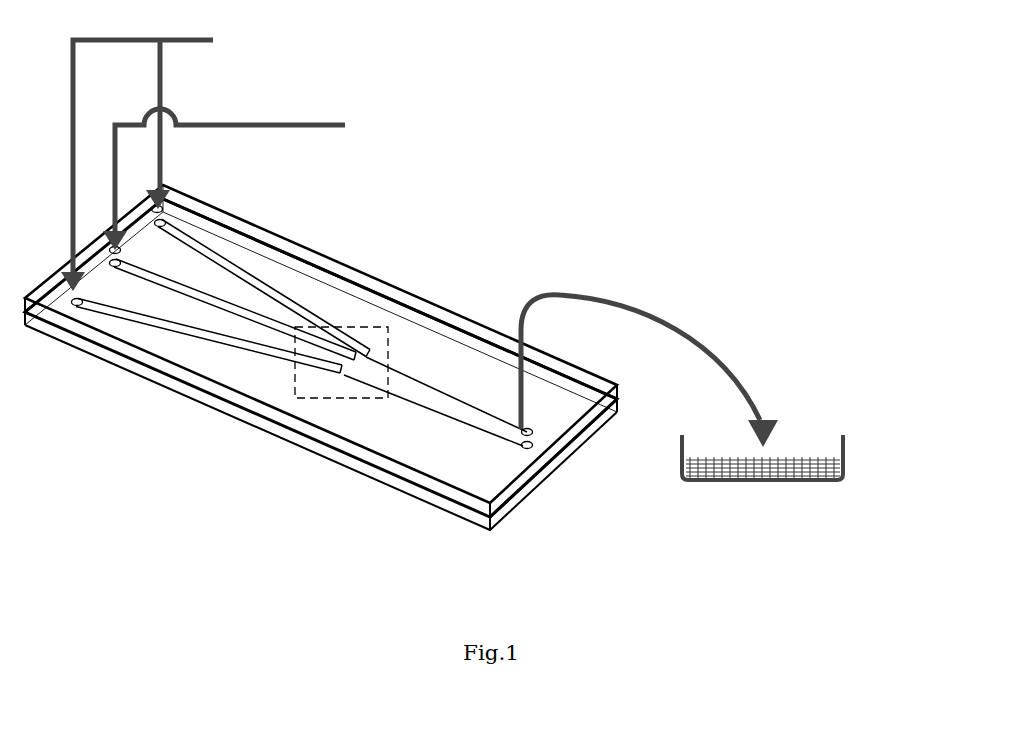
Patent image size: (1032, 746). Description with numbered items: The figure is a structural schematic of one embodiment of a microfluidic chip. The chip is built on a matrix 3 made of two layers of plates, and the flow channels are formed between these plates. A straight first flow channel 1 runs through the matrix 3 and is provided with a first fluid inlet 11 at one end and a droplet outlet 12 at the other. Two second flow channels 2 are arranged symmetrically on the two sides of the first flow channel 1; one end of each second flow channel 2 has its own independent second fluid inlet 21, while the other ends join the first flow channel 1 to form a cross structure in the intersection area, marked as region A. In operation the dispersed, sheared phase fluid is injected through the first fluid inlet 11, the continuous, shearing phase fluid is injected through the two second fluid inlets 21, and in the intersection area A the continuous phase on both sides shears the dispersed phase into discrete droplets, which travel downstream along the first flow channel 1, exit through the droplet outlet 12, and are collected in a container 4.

The first flow channel 1 is at (430, 408).
The droplet outlet 12 is at (547, 457).
The matrix 3 is at (272, 256).
The second flow channel 2 is at (193, 273).
The channel junction region A is at (378, 327).
The second fluid inlet 21 is at (145, 147).
The first fluid inlet 11 is at (243, 173).
The container 4 is at (846, 462).